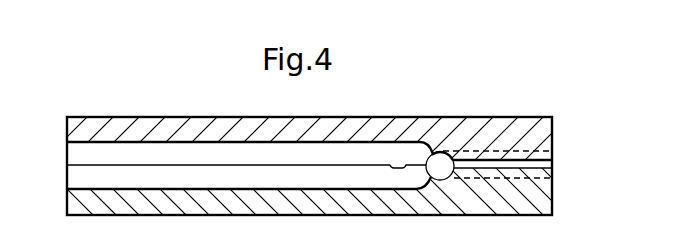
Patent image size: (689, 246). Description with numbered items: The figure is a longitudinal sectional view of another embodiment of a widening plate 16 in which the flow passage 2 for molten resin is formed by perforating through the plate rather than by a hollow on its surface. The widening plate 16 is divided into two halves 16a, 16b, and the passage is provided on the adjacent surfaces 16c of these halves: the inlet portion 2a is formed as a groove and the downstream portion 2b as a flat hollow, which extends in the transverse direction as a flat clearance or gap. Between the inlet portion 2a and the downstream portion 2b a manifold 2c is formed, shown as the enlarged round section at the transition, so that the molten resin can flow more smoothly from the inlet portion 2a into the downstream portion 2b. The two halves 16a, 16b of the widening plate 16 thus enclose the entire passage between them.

The flat hollow 2 is at (340, 151).
The inlet portion 2a is at (143, 152).
The downstream portion 2b is at (503, 157).
The manifold 2c is at (437, 173).
The widening plate 16 is at (470, 104).
The upper half of widening plate 16a is at (540, 142).
The lower half of widening plate 16b is at (540, 200).
The adjacent surfaces 16c is at (378, 164).